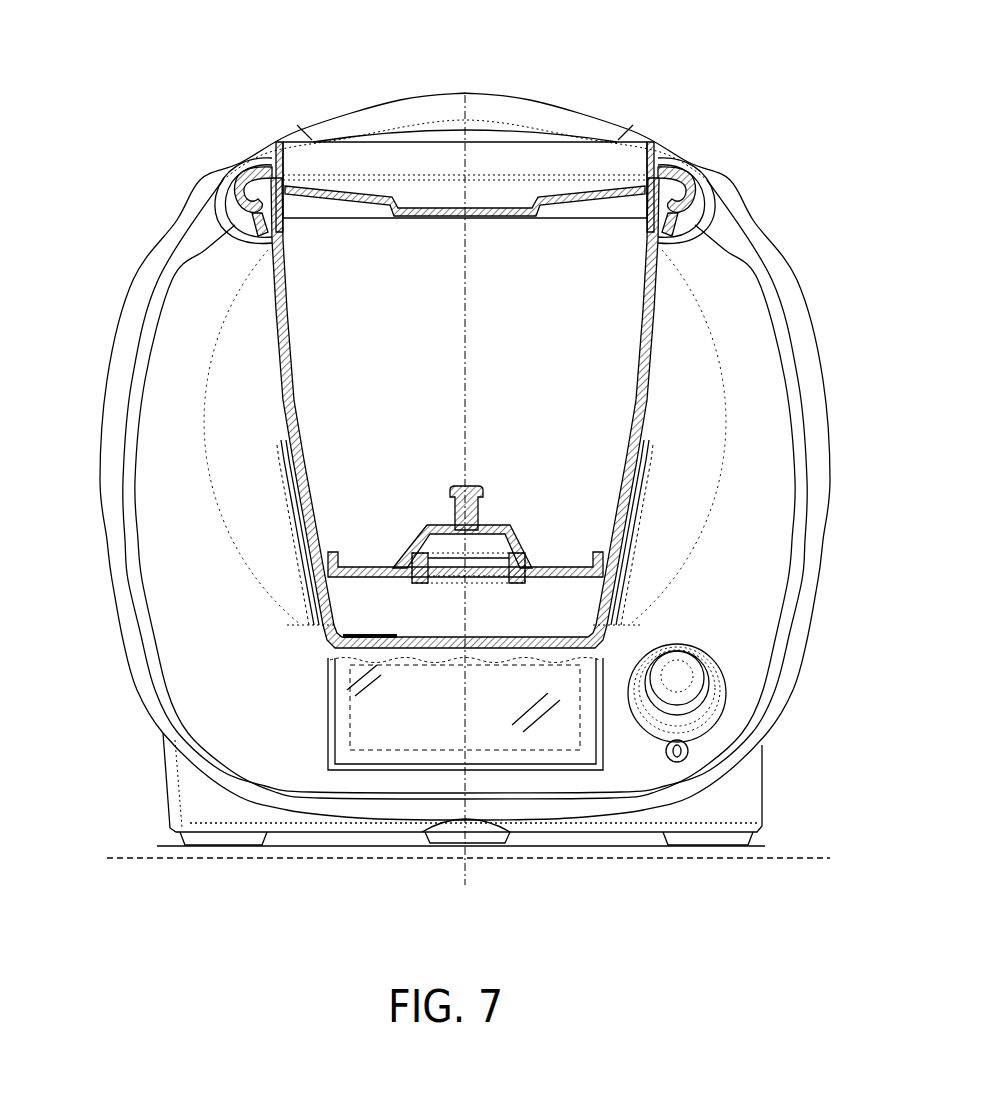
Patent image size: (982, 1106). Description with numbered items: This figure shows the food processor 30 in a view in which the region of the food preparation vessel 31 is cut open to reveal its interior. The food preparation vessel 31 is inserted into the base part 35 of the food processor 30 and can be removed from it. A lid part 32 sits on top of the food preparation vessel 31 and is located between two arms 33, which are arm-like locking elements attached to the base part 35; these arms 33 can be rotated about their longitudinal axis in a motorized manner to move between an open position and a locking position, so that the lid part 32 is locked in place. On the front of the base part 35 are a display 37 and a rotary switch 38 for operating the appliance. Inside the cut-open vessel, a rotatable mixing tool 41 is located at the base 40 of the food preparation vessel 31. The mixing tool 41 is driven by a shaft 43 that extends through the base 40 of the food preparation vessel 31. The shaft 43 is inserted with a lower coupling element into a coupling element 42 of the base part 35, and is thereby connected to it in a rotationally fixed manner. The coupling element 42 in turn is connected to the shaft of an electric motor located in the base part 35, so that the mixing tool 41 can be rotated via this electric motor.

The food processor 30 is at (676, 93).
The food preparation vessel 31 is at (275, 338).
The lid part 32 is at (315, 187).
The arms 33 is at (228, 202).
The base part 35 is at (737, 283).
The display 37 is at (507, 727).
The rotary switch 38 is at (687, 680).
The base 40 is at (367, 570).
The mixing tool 41 is at (425, 527).
The coupling element 42 is at (497, 573).
The shaft 43 is at (480, 503).